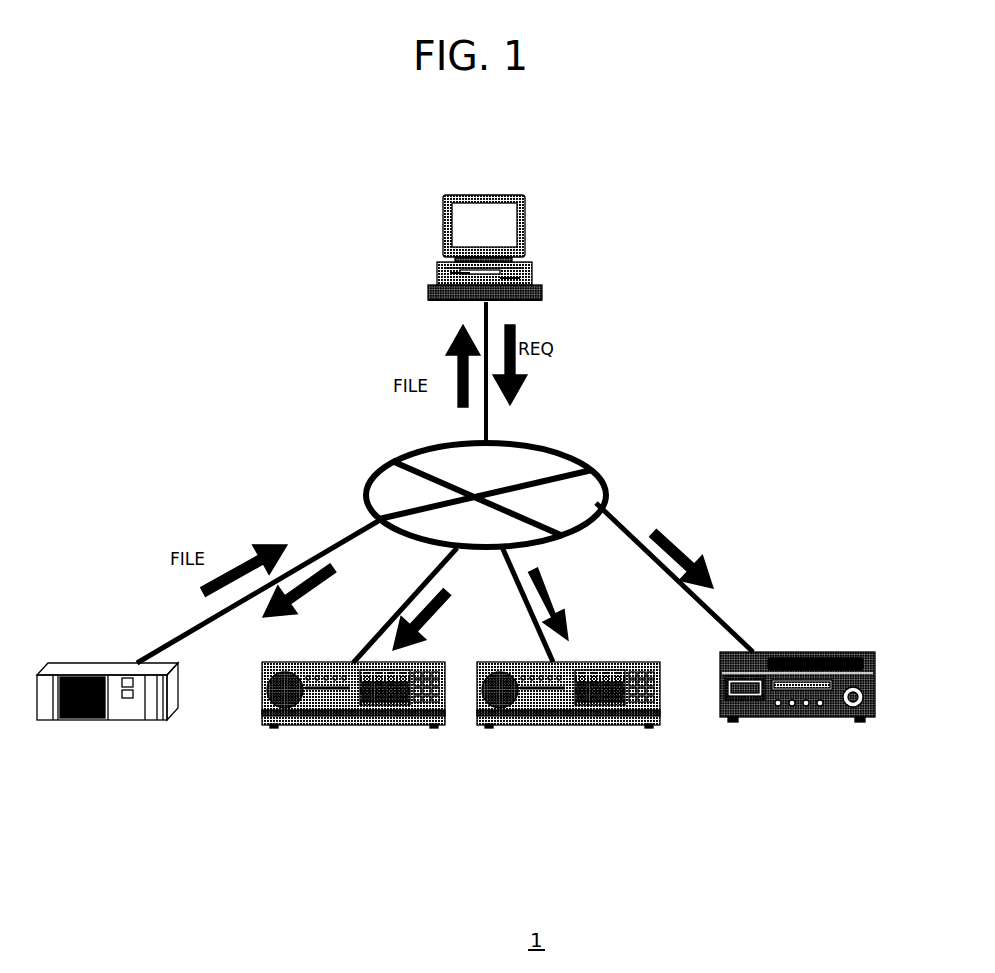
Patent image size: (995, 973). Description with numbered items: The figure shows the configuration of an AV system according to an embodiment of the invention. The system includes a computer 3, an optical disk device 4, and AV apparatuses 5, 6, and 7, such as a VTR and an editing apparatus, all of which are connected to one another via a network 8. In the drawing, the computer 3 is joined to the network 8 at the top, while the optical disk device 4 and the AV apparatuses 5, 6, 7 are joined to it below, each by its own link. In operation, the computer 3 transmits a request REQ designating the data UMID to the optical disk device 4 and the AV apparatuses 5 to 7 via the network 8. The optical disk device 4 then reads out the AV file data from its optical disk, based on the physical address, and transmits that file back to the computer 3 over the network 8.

The computer 3 is at (527, 263).
The optical disk device 4 is at (82, 720).
The AV apparatus 5 is at (322, 708).
The AV apparatus 6 is at (548, 708).
The AV apparatus 7 is at (772, 703).
The network 8 is at (548, 450).